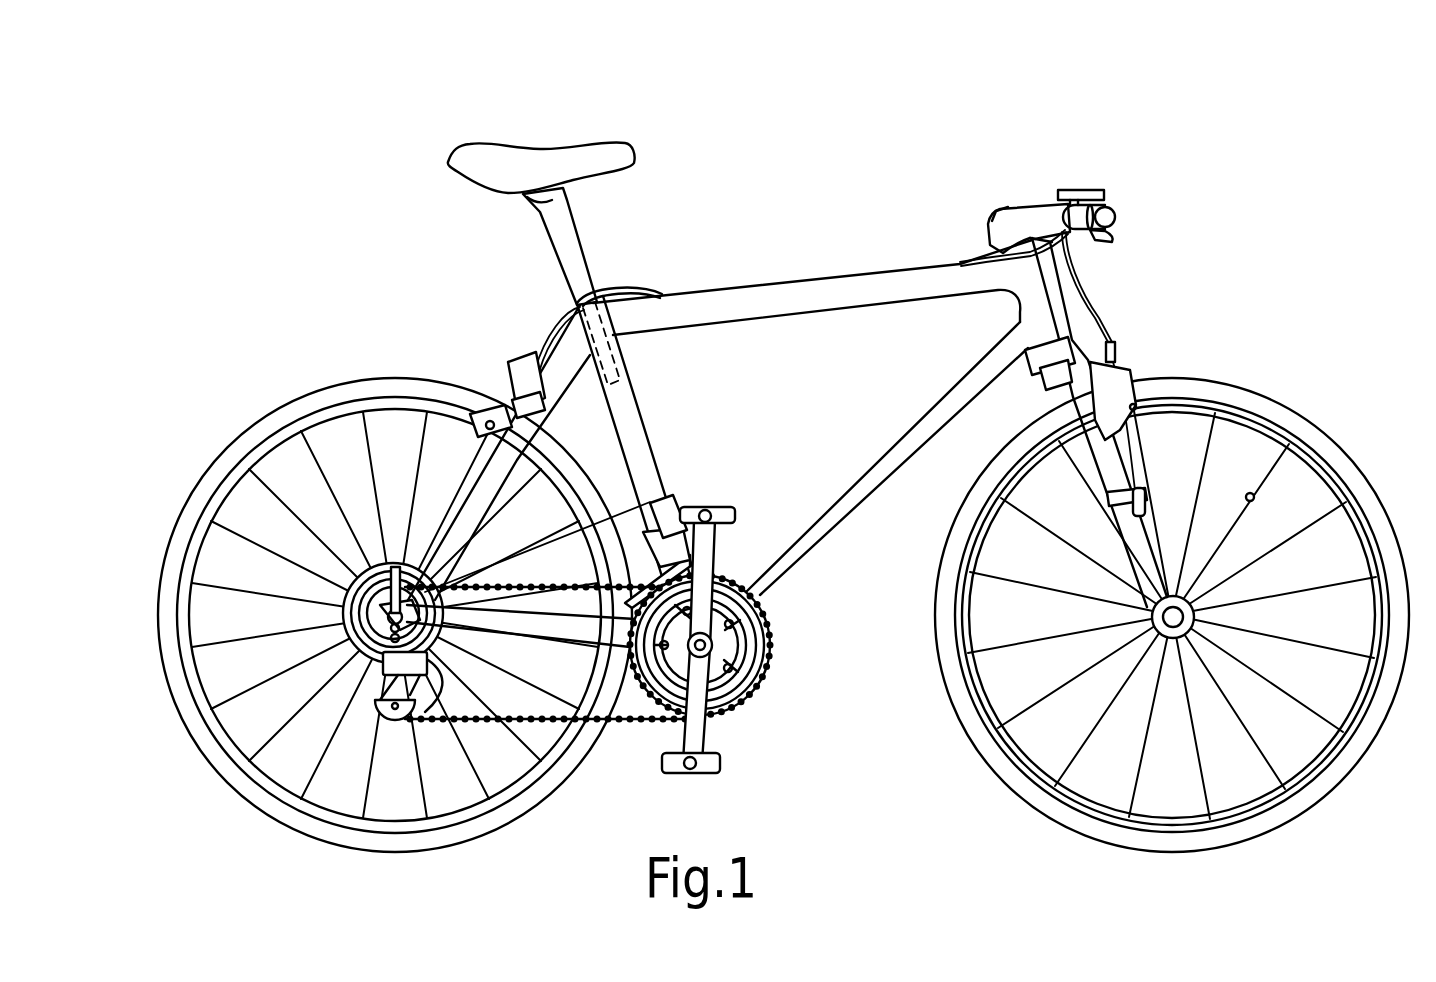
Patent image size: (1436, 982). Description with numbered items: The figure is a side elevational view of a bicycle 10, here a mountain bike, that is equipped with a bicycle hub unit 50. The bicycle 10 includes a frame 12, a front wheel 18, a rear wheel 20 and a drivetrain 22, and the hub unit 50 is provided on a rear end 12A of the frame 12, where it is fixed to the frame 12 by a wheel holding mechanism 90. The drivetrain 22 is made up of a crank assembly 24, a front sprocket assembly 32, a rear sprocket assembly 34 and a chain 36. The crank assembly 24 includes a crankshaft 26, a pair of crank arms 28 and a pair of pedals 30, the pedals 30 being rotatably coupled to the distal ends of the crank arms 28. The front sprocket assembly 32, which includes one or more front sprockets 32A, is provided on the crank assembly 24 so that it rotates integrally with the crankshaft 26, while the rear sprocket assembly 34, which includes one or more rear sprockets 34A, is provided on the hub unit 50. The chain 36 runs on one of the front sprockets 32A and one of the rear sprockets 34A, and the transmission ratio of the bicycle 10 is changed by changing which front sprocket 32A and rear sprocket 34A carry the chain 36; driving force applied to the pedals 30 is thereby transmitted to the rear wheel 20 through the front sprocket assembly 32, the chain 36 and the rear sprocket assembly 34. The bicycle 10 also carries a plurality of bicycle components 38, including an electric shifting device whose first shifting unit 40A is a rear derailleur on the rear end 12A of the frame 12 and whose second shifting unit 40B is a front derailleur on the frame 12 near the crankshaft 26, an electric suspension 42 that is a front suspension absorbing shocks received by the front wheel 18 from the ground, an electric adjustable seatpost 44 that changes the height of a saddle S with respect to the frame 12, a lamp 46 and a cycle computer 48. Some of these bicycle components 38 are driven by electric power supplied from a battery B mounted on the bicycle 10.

The bicycle 10 is at (783, 432).
The frame 12 is at (773, 425).
The rear end 12A is at (421, 552).
The front wheel 18 is at (1332, 425).
The rear wheel 20 is at (248, 420).
The drivetrain 22 is at (734, 467).
The crank assembly 24 is at (730, 647).
The crankshaft 26 is at (712, 637).
The crank arms 28 is at (718, 546).
The pedals 30 is at (716, 507).
The front sprocket assembly 32 is at (730, 675).
The front sprocket 32A is at (645, 722).
The rear sprocket assembly 34 is at (357, 567).
The rear sprocket 34A is at (352, 575).
The chain 36 is at (538, 711).
The bicycle components 38 is at (607, 568).
The first shifting unit 40A is at (446, 726).
The second shifting unit 40B is at (622, 490).
The electric suspension 42 is at (1085, 440).
The electric adjustable seatpost 44 is at (586, 231).
The lamp 46 is at (1139, 502).
The cycle computer 48 is at (1081, 188).
The bicycle hub unit 50 is at (447, 637).
The wheel holding mechanism 90 is at (386, 556).
The saddle S is at (538, 144).
The battery B is at (688, 490).